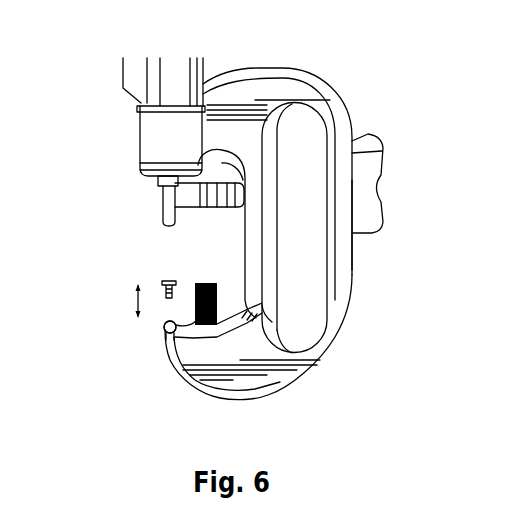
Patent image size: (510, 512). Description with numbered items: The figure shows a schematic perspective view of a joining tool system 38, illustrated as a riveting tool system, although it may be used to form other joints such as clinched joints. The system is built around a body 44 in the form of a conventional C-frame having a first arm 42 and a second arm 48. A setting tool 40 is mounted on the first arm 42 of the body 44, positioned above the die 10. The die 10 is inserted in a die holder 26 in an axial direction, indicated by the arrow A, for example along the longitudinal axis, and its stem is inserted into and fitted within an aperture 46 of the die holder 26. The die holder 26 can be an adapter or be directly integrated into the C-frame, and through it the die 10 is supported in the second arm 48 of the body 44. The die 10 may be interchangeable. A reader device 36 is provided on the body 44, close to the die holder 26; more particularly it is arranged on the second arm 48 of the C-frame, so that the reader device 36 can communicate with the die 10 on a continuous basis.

The die 10 is at (150, 273).
The die holder 26 is at (165, 329).
The aperture 46 is at (133, 344).
The reader device 36 is at (215, 312).
The joining tool system 38 is at (383, 92).
The setting tool 40 is at (153, 208).
The first arm 42 is at (242, 100).
The body 44 is at (350, 283).
The second arm 48 is at (238, 388).